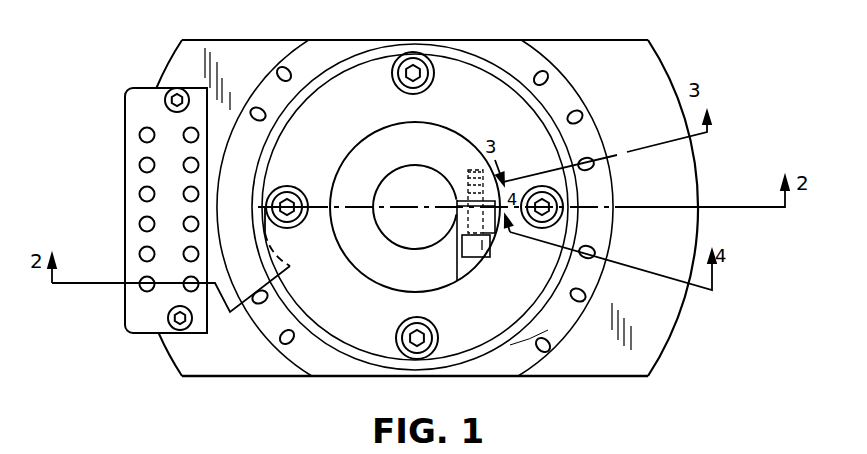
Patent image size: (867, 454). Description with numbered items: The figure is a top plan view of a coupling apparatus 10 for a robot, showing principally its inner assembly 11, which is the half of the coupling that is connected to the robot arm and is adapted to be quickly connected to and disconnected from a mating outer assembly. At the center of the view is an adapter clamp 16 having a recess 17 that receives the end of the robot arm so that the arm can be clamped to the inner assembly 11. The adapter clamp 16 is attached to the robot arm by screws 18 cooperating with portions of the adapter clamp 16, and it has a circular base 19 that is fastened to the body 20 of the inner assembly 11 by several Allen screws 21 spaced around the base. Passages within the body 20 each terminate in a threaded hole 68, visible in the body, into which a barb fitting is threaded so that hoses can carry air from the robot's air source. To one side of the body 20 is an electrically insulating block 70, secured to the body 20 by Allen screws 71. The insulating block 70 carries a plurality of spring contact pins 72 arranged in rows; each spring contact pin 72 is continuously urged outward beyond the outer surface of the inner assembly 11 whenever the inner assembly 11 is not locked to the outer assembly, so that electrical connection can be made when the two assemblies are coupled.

The coupling apparatus 10 is at (335, 382).
The inner assembly 11 is at (703, 185).
The adapter clamp 16 is at (492, 60).
The recess 17 is at (390, 182).
The screws 18 is at (473, 258).
The circular base 19 is at (520, 123).
The body 20 is at (597, 378).
The Allen screws 21 is at (396, 334).
The threaded hole 68 is at (548, 352).
The electrically insulating block 70 is at (125, 303).
The Allen screws 71 is at (172, 318).
The spring contact pins 72 is at (143, 160).